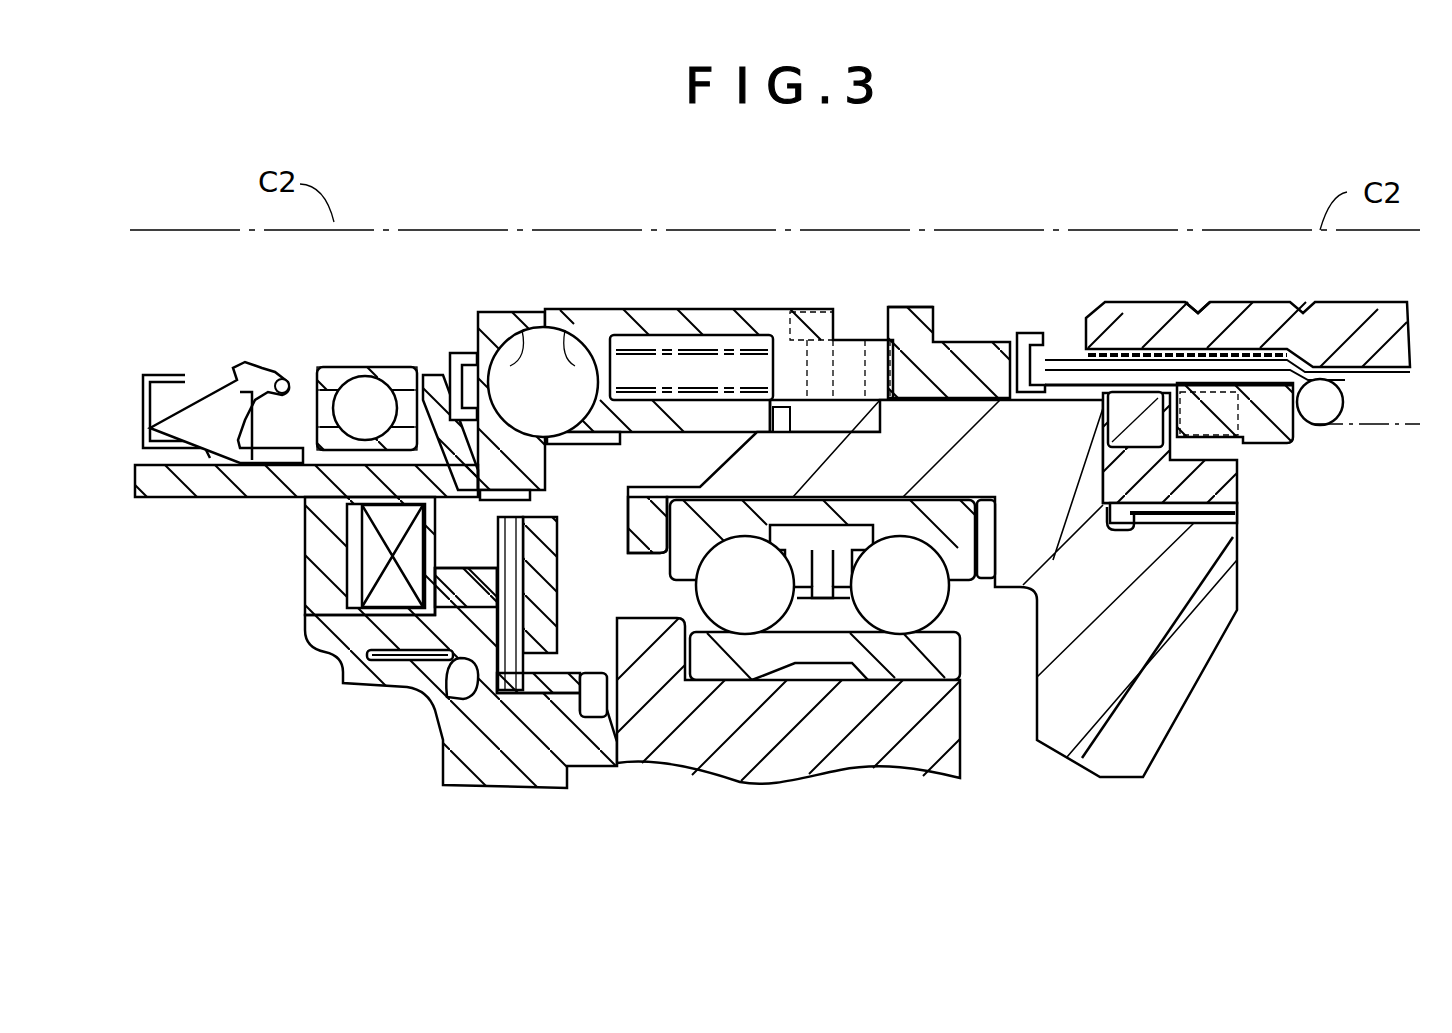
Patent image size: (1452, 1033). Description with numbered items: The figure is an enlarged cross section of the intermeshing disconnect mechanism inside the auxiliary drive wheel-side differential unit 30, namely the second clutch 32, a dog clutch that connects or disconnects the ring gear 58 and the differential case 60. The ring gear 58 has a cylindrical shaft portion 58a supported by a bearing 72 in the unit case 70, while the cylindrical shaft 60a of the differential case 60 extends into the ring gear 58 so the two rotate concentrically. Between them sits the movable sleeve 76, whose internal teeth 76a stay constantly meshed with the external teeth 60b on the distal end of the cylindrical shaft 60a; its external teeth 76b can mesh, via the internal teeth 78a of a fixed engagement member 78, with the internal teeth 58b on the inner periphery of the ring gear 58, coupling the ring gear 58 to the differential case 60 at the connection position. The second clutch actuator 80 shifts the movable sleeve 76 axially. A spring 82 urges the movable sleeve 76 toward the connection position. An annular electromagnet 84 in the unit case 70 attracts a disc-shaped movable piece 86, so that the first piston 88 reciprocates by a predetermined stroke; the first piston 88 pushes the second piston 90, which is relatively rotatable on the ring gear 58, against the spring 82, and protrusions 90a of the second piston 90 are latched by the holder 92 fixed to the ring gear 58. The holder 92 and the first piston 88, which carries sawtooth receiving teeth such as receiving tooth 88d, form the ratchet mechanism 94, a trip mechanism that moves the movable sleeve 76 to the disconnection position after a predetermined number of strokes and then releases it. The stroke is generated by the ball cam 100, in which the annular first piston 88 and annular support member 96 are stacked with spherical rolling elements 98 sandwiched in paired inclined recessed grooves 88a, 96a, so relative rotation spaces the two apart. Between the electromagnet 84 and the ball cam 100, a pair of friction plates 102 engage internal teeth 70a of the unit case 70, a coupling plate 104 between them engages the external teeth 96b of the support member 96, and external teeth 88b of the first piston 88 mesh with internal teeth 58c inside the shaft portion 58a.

The drive unit 30 is at (1220, 216).
The second clutch 32 is at (1322, 609).
The ring gear 58 is at (1220, 690).
The shaft portion 58a is at (853, 480).
The internal teeth 58b is at (1248, 538).
The internal teeth 58c is at (655, 447).
The differential case 60 is at (1337, 306).
The cylindrical shaft 60a is at (1228, 350).
The external teeth 60b is at (1128, 350).
The unit case 70 is at (535, 755).
The internal teeth 70a is at (437, 717).
The bearing 72 is at (753, 600).
The movable sleeve 76 is at (1175, 545).
The internal teeth 76a is at (1063, 352).
The external teeth 76b is at (1235, 445).
The fixed engagement member 78 is at (1243, 492).
The internal teeth 78a is at (1127, 428).
The second clutch actuator 80 is at (437, 358).
The spring 82 is at (1403, 432).
The annular electromagnet 84 is at (378, 560).
The movable piece 86 is at (547, 574).
The first piston 88 is at (665, 308).
The inclined recessed groove 88a is at (553, 333).
The external teeth 88b is at (577, 438).
The receiving tooth 88d is at (830, 322).
The second piston 90 is at (982, 325).
The protrusions 90a is at (917, 330).
The holder 92 is at (847, 382).
The ratchet mechanism 94 is at (784, 260).
The support member 96 is at (466, 311).
The inclined recessed groove 96a is at (545, 358).
The external teeth 96b is at (448, 378).
The spherical rolling elements 98 is at (552, 382).
The ball cam 100 is at (545, 278).
The friction plates 102 is at (372, 644).
The coupling plate 104 is at (507, 543).